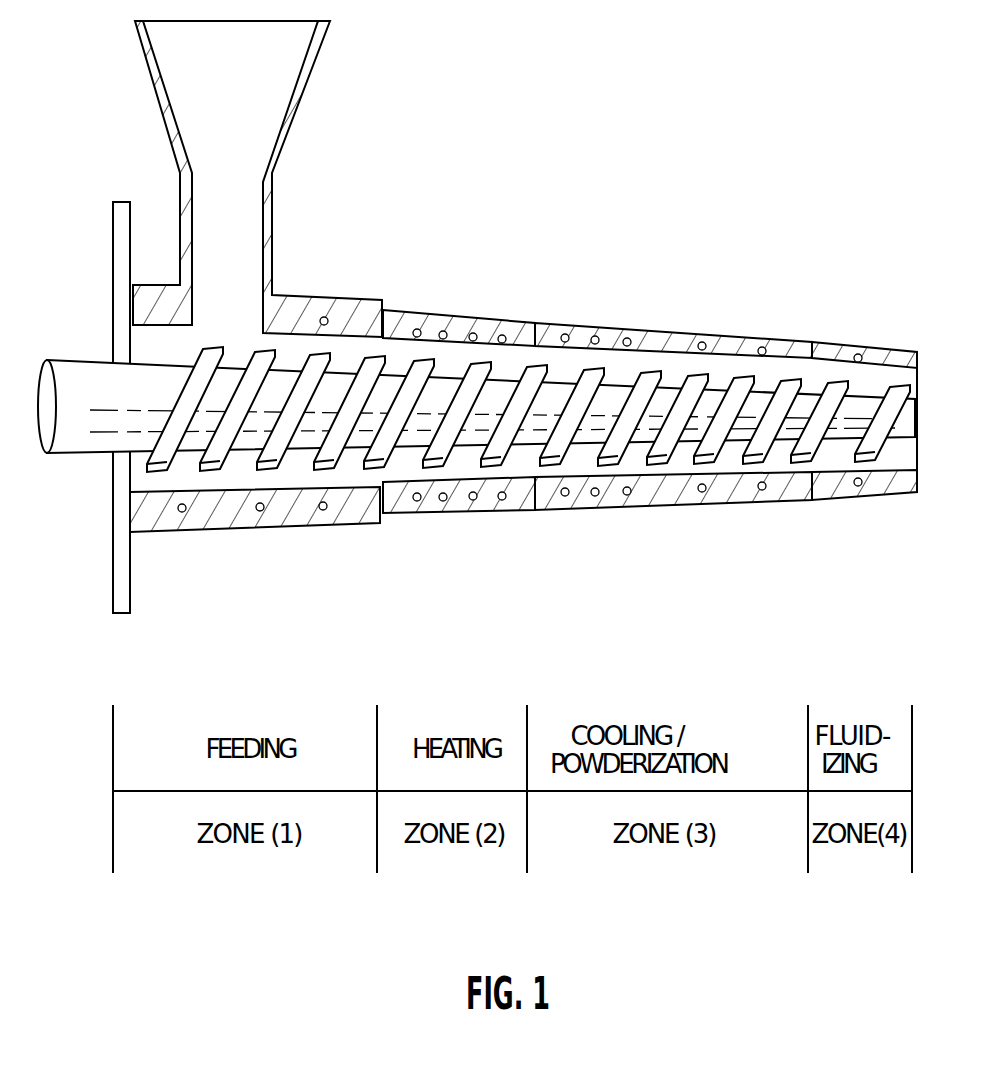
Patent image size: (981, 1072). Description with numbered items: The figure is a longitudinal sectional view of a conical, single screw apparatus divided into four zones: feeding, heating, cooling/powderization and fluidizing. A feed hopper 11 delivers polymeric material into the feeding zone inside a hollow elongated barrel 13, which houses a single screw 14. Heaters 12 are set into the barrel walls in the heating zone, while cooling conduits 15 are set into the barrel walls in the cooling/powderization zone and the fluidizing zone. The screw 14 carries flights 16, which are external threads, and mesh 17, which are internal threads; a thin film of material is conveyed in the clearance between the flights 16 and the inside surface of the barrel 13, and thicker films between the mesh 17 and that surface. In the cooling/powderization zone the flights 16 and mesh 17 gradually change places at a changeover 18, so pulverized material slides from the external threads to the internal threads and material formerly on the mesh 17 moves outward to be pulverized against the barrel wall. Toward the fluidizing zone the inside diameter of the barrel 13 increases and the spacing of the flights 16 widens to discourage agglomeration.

The feed hopper 11 is at (307, 98).
The heaters 12 is at (430, 310).
The hollow elongated barrel 13 is at (870, 354).
The screw 14 is at (464, 442).
The cooling conduits 15 is at (858, 487).
The flights 16 is at (484, 370).
The mesh 17 is at (565, 380).
The changeover 18 is at (672, 400).